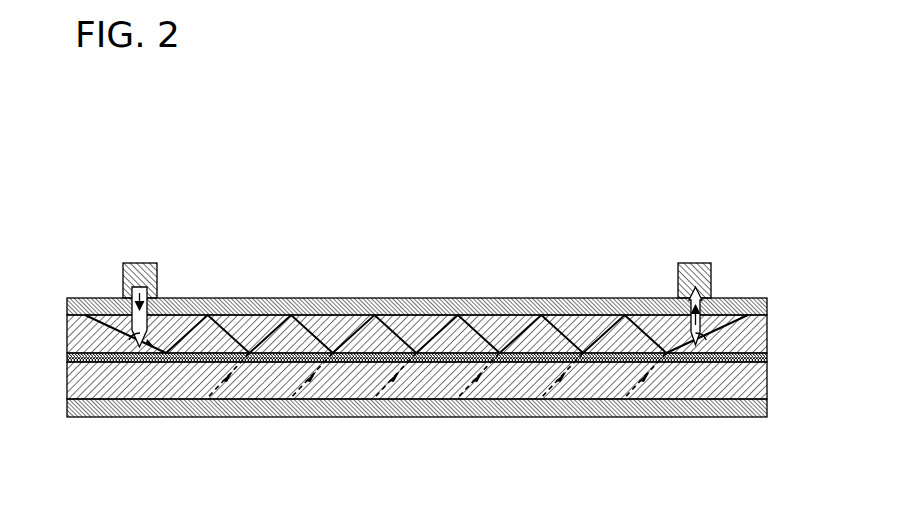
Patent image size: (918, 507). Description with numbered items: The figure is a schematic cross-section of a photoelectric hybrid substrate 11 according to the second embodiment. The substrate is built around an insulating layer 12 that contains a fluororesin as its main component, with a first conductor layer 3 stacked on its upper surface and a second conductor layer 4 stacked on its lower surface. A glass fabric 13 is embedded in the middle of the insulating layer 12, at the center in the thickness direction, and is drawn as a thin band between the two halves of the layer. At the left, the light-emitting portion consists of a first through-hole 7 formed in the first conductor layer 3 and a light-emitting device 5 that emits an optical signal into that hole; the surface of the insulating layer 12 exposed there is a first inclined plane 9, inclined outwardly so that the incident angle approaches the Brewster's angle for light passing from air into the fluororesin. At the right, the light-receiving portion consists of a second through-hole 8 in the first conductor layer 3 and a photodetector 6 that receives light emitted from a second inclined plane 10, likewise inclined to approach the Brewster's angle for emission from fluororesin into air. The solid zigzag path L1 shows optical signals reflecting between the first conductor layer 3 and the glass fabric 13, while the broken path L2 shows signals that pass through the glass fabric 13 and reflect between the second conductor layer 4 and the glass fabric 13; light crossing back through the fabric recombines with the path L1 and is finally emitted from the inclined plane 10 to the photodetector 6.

The photoelectric hybrid substrate 11 is at (257, 172).
The first conductor layer 3 is at (245, 298).
The second conductor layer 4 is at (118, 417).
The insulating layer 12 is at (67, 340).
The glass fabric 13 is at (767, 358).
The light-emitting device 5 is at (147, 263).
The photodetector 6 is at (684, 263).
The first through-hole 7 is at (134, 288).
The second through-hole 8 is at (700, 290).
The first inclined plane 9 is at (85, 315).
The second inclined plane 10 is at (750, 314).
The optical signal path L1 is at (396, 315).
The optical signal path L2 is at (337, 417).